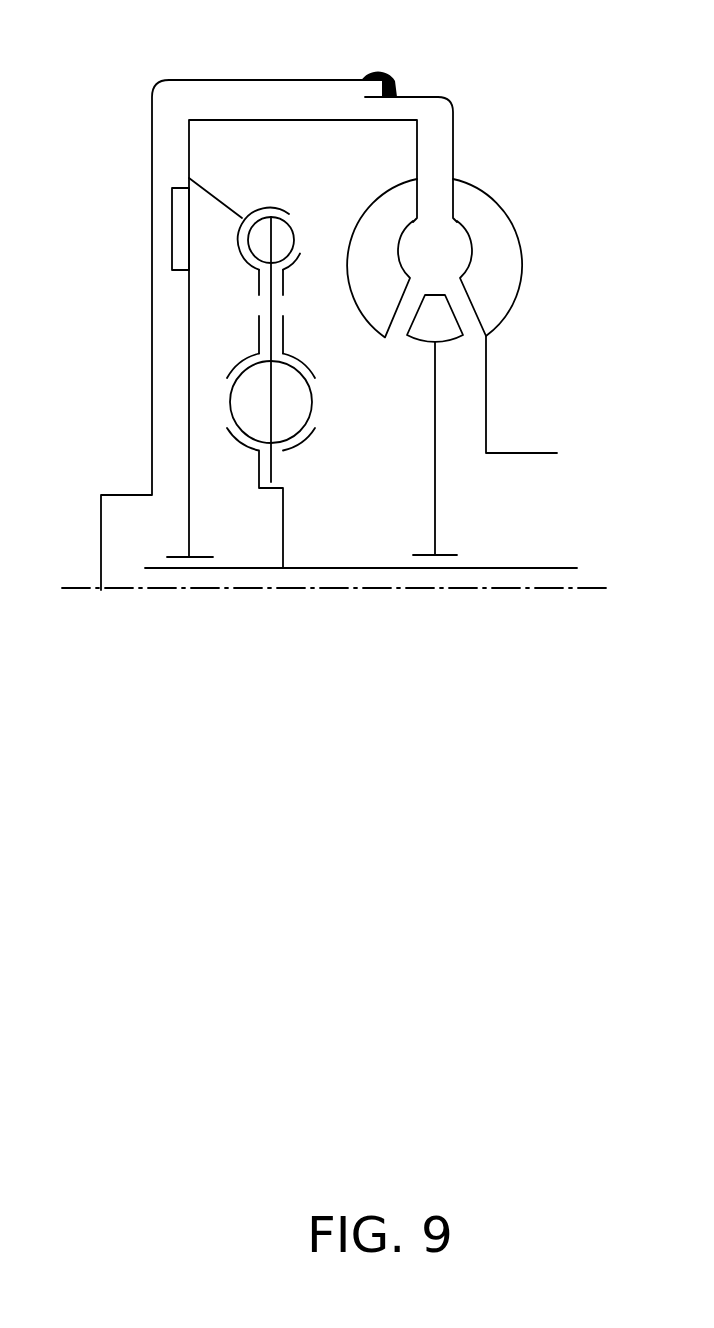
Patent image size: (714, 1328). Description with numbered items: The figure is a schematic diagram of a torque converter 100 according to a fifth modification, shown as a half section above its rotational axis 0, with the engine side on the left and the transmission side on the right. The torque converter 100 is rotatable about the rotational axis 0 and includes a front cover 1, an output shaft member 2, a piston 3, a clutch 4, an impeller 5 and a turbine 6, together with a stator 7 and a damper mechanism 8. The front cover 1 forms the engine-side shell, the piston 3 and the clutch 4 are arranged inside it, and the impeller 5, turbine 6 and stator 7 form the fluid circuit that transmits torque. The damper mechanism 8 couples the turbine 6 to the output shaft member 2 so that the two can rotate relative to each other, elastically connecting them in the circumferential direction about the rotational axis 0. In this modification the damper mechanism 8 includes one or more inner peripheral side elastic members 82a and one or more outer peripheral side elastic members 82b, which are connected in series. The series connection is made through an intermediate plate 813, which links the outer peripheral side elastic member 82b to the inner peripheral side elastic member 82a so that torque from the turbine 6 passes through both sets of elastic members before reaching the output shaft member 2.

The torque converter 100 is at (473, 80).
The front cover 1 is at (150, 222).
The piston 3 is at (188, 352).
The clutch 4 is at (178, 186).
The turbine 6 is at (411, 118).
The damper mechanism 8 is at (290, 200).
The outer peripheral side elastic member 82b is at (297, 240).
The intermediate plate 813 is at (272, 303).
The inner peripheral side elastic member 82a is at (313, 410).
The impeller 5 is at (517, 233).
The stator 7 is at (413, 345).
The output shaft member 2 is at (314, 568).
The rotational axis 0 is at (583, 588).